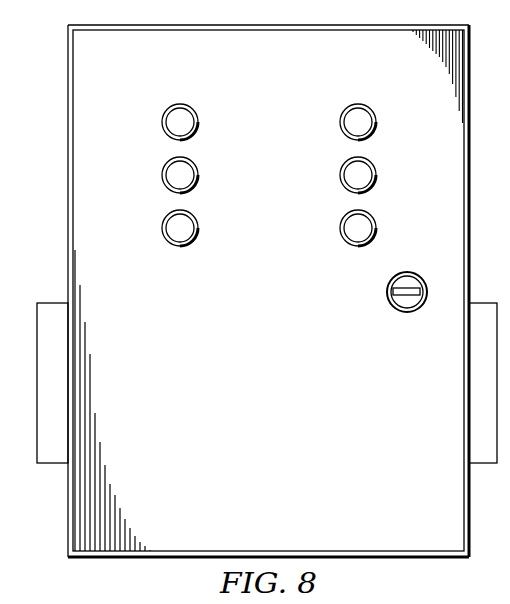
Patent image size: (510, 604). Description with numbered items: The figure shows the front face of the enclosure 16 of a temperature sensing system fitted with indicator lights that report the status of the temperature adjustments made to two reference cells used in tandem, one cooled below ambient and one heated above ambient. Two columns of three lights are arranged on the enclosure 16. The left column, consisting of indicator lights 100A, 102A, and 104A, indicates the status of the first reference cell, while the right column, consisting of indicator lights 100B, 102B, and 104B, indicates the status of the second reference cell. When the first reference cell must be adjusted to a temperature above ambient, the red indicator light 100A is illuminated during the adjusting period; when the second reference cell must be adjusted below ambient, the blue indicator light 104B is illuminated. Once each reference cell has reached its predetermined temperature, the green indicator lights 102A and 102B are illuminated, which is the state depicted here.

The enclosure 16 is at (68, 263).
The red indicator light 100A is at (162, 123).
The indicator light 100B is at (377, 119).
The green indicator light 102A is at (162, 176).
The green indicator light 102B is at (377, 172).
The indicator light 104A is at (162, 229).
The blue indicator light 104B is at (377, 225).